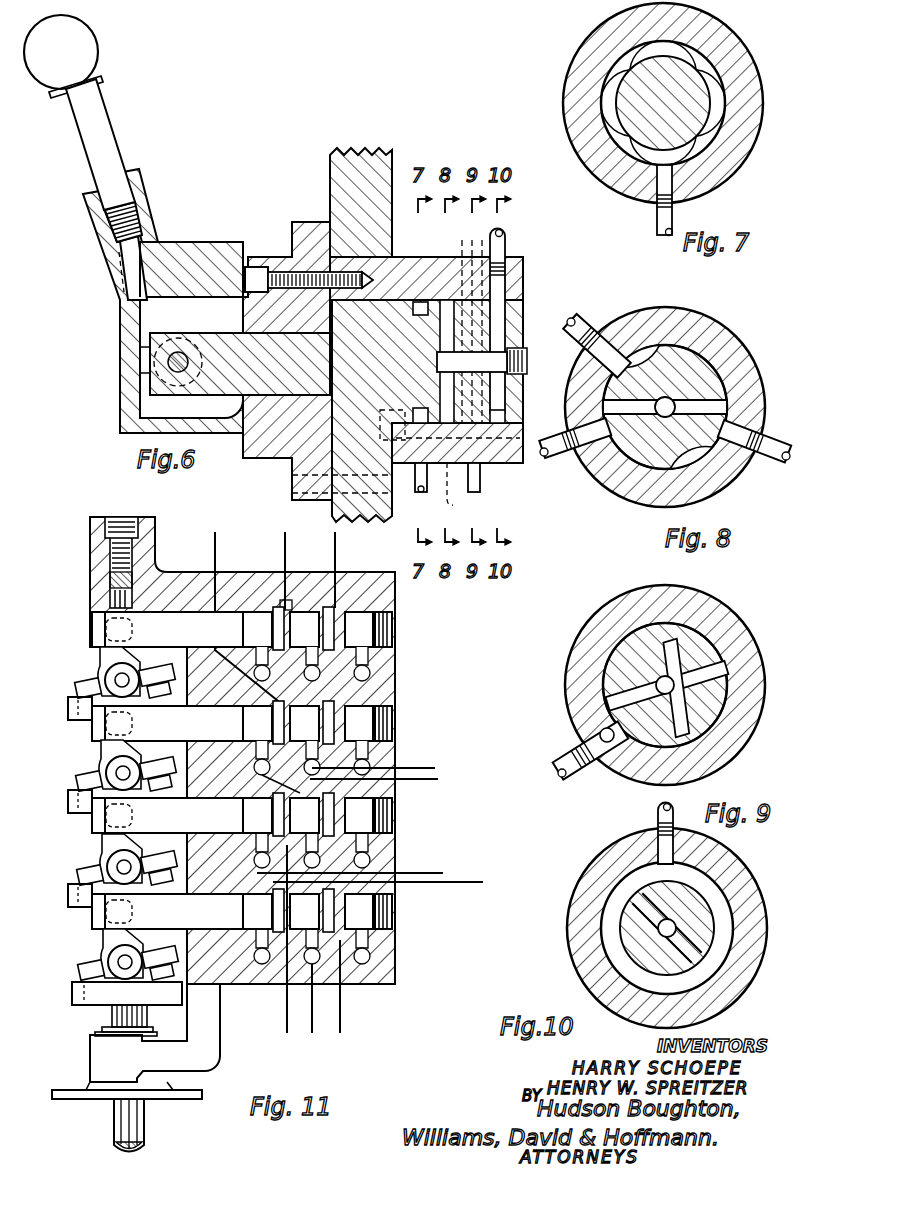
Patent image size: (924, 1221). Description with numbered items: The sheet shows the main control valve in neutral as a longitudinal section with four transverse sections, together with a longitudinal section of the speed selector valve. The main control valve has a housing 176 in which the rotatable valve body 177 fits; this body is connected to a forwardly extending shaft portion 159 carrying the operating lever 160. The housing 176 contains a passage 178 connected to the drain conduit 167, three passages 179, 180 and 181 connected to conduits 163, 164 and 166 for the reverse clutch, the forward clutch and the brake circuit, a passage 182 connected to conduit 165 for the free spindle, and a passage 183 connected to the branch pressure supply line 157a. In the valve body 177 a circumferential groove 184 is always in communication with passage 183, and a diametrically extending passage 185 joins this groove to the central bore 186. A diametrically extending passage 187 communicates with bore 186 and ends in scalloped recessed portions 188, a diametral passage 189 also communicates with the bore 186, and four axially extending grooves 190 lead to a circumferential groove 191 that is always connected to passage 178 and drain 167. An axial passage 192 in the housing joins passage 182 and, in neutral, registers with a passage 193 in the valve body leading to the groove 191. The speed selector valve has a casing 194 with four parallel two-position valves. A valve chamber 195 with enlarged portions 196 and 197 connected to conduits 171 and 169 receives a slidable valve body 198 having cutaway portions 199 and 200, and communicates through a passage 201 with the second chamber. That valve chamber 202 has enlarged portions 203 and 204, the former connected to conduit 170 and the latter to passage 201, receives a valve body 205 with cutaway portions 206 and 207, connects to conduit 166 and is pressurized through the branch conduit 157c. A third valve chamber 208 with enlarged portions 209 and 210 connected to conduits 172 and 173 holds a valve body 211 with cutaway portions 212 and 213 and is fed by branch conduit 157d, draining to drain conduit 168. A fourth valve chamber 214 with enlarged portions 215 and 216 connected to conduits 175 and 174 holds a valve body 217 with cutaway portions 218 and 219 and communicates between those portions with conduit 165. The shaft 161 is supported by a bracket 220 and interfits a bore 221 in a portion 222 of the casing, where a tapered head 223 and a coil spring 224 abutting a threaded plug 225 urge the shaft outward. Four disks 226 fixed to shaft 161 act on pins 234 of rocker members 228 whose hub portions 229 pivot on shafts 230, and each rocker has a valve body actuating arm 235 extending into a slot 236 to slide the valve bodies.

In FIG. 6, the branch conduit 157a is at (506, 234).
In FIG. 10, the branch conduit 157a is at (657, 823).
In FIG. 11, the branch conduit 157c is at (438, 780).
In FIG. 11, the branch conduit 157d is at (444, 873).
In FIG. 6, the shaft portion 159 is at (218, 390).
In FIG. 6, the operating lever 160 is at (102, 152).
In FIG. 11, the shaft 161 is at (148, 1116).
In FIG. 8, the conduit 163 is at (620, 313).
In FIG. 8, the conduit 164 is at (548, 458).
In FIG. 6, the conduit 165 is at (481, 483).
In FIG. 9, the conduit 165 is at (576, 749).
In FIG. 11, the conduit 165 is at (312, 1031).
In FIG. 8, the conduit 166 is at (760, 461).
In FIG. 11, the conduit 166 is at (262, 768).
In FIG. 6, the drain conduit 167 is at (428, 489).
In FIG. 7, the drain conduit 167 is at (656, 214).
In FIG. 11, the drain conduit 168 is at (266, 681).
In FIG. 11, the conduit 169 is at (334, 550).
In FIG. 11, the conduit 170 is at (213, 550).
In FIG. 11, the conduit 171 is at (283, 550).
In FIG. 11, the conduit 172 is at (443, 888).
In FIG. 11, the conduit 173 is at (404, 872).
In FIG. 11, the conduit 174 is at (342, 1016).
In FIG. 11, the conduit 175 is at (286, 1006).
In FIG. 6, the housing 176 is at (405, 265).
In FIG. 7, the housing 176 is at (720, 29).
In FIG. 8, the housing 176 is at (718, 298).
In FIG. 9, the housing 176 is at (708, 602).
In FIG. 10, the housing 176 is at (738, 869).
In FIG. 6, the valve body 177 is at (417, 331).
In FIG. 7, the valve body 177 is at (718, 59).
In FIG. 8, the valve body 177 is at (664, 407).
In FIG. 9, the valve body 177 is at (733, 673).
In FIG. 10, the valve body 177 is at (647, 889).
In FIG. 6, the passage 178 is at (400, 466).
In FIG. 7, the passage 178 is at (688, 186).
In FIG. 8, the passage 179 is at (618, 336).
In FIG. 8, the passage 180 is at (598, 462).
In FIG. 8, the passage 181 is at (753, 426).
In FIG. 6, the passage 182 is at (504, 419).
In FIG. 8, the passage 182 is at (603, 413).
In FIG. 9, the passage 182 is at (620, 776).
In FIG. 6, the passage 183 is at (512, 269).
In FIG. 10, the passage 183 is at (690, 843).
In FIG. 6, the circumferential groove 184 is at (510, 401).
In FIG. 8, the circumferential groove 184 is at (602, 402).
In FIG. 10, the circumferential groove 184 is at (608, 941).
In FIG. 10, the diametrically extending passage 185 is at (693, 957).
In FIG. 6, the central bore 186 is at (505, 305).
In FIG. 8, the central bore 186 is at (740, 353).
In FIG. 9, the central bore 186 is at (628, 636).
In FIG. 10, the central bore 186 is at (657, 928).
In FIG. 6, the diametrically extending passage 187 is at (473, 257).
In FIG. 9, the diametrically extending passage 187 is at (727, 717).
In FIG. 6, the recessed portions 188 is at (490, 238).
In FIG. 9, the recessed portions 188 is at (672, 623).
In FIG. 6, the diametral passage 189 is at (437, 356).
In FIG. 8, the diametral passage 189 is at (623, 387).
In FIG. 6, the grooves 190 is at (433, 322).
In FIG. 7, the grooves 190 is at (700, 152).
In FIG. 8, the grooves 190 is at (707, 366).
In FIG. 6, the circumferential groove 191 is at (418, 306).
In FIG. 7, the circumferential groove 191 is at (705, 167).
In FIG. 6, the passage 192 is at (448, 492).
In FIG. 9, the passage 192 is at (599, 734).
In FIG. 6, the passage 193 is at (395, 412).
In FIG. 11, the valve body or casing 194 is at (394, 588).
In FIG. 11, the valve chamber 195 is at (250, 611).
In FIG. 11, the enlarged portion 196 is at (298, 609).
In FIG. 11, the enlarged portion 197 is at (352, 609).
In FIG. 11, the valve body 198 is at (167, 629).
In FIG. 11, the cutaway portion 199 is at (259, 629).
In FIG. 11, the cutaway portion 200 is at (305, 629).
In FIG. 11, the passage 201 is at (312, 669).
In FIG. 11, the valve chamber 202 is at (245, 686).
In FIG. 11, the enlarged portion 203 is at (309, 768).
In FIG. 11, the enlarged portion 204 is at (338, 729).
In FIG. 11, the valve body 205 is at (167, 723).
In FIG. 11, the cutaway portion 206 is at (259, 723).
In FIG. 11, the cutaway portion 207 is at (305, 723).
In FIG. 11, the valve chamber 208 is at (252, 783).
In FIG. 11, the enlarged portion 209 is at (284, 792).
In FIG. 11, the enlarged portion 210 is at (342, 794).
In FIG. 11, the valve body 211 is at (167, 815).
In FIG. 11, the cutaway portion 212 is at (259, 815).
In FIG. 11, the cutaway portion 213 is at (305, 815).
In FIG. 11, the valve chamber 214 is at (250, 934).
In FIG. 11, the enlarged portion 215 is at (284, 886).
In FIG. 11, the enlarged portion 216 is at (360, 911).
In FIG. 11, the valve body 217 is at (167, 911).
In FIG. 11, the cutaway portion 218 is at (259, 911).
In FIG. 11, the cutaway portion 219 is at (305, 911).
In FIG. 11, the bracket 220 is at (218, 1040).
In FIG. 11, the bore 221 is at (108, 603).
In FIG. 11, the portion of casting 222 is at (150, 540).
In FIG. 11, the tapered head 223 is at (108, 579).
In FIG. 11, the coil spring 224 is at (108, 552).
In FIG. 11, the threaded plug 225 is at (108, 516).
In FIG. 11, the disks 226 is at (68, 712).
In FIG. 11, the rocker members 228 is at (98, 673).
In FIG. 11, the hub portions 229 is at (118, 774).
In FIG. 11, the shafts 230 is at (100, 769).
In FIG. 11, the pins 234 is at (189, 761).
In FIG. 11, the valve body actuating arm 235 is at (100, 753).
In FIG. 11, the slot 236 is at (150, 731).